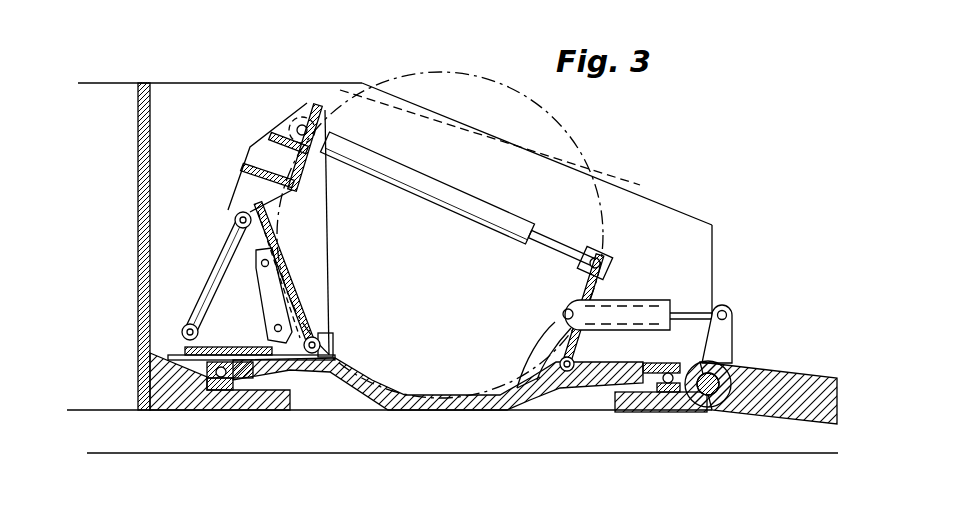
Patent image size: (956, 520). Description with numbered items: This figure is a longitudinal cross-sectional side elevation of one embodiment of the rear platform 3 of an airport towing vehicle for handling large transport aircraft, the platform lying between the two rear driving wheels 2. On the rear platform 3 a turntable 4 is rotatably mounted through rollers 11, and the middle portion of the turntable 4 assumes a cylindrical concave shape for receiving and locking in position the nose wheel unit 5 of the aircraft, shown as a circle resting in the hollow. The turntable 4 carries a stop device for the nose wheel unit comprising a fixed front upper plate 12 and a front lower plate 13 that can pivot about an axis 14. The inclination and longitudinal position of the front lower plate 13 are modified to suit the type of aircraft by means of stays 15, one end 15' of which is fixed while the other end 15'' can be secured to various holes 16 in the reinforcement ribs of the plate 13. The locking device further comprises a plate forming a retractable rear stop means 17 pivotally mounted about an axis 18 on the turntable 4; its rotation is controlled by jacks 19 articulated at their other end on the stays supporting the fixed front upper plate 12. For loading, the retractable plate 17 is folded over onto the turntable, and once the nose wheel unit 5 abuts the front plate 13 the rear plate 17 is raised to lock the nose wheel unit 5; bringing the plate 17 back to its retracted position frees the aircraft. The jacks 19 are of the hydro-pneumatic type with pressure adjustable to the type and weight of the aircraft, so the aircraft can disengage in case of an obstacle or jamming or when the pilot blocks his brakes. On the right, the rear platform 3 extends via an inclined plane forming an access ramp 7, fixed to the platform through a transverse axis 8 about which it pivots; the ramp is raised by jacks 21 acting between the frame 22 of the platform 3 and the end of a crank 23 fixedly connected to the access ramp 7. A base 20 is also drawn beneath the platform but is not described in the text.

The rear driving wheel 2 is at (548, 428).
The rear platform 3 is at (226, 400).
The turntable 4 is at (321, 380).
The nose wheel unit 5 is at (573, 141).
The access ramp 7 is at (800, 380).
The transverse axis 8 is at (712, 392).
The rollers 11 is at (227, 378).
The fixed front upper plate 12 is at (312, 103).
The front lower plate 13 is at (300, 303).
The axis 14 is at (321, 345).
The stays 15 is at (205, 275).
The fixed end of stay 15' is at (178, 314).
The securable end of stay 15'' is at (210, 209).
The holes 16 is at (272, 322).
The retractable rear stop plate 17 is at (600, 285).
The axis 18 is at (571, 372).
The jacks 19 is at (588, 169).
The base 20 is at (190, 362).
The jacks 21 is at (653, 305).
The frame 22 is at (526, 385).
The crank 23 is at (725, 342).